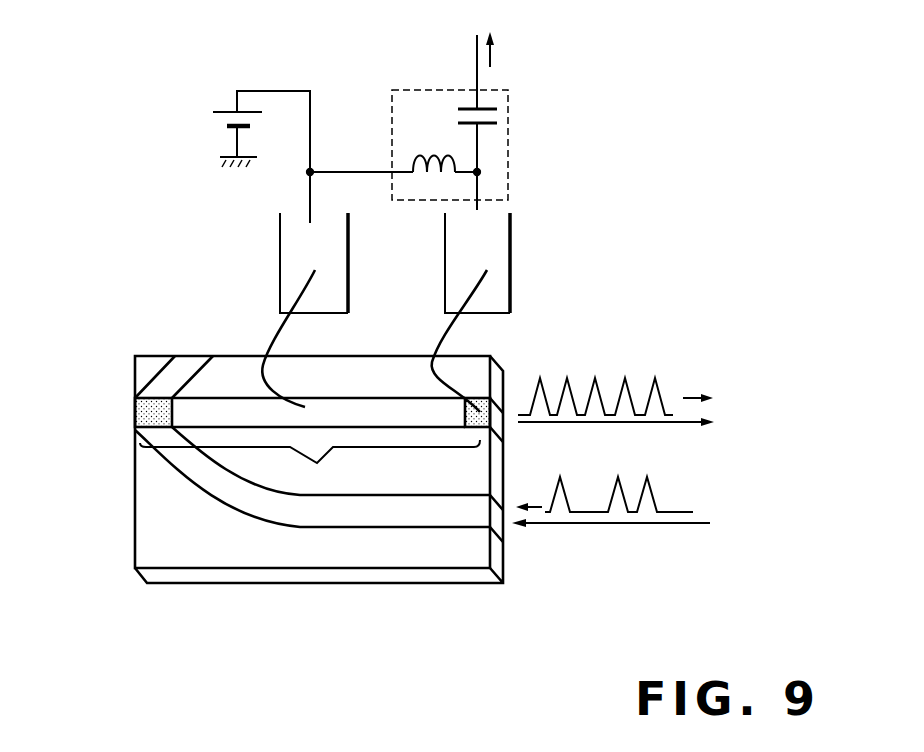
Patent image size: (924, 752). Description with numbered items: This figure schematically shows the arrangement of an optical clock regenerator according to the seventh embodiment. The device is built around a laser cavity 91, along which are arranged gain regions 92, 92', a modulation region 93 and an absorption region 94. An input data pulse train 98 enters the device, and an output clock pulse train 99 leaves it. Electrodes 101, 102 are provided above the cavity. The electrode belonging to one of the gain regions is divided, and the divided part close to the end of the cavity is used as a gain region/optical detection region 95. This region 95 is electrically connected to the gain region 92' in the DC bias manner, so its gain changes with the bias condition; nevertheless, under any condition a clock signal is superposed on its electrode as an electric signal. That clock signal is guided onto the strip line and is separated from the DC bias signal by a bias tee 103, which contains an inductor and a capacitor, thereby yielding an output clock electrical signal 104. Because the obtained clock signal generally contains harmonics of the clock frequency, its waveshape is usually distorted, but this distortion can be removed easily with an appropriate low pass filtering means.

The laser cavity 91 is at (321, 448).
The gain region 92 is at (319, 539).
The gain region 92' is at (397, 525).
The modulation region 93 is at (143, 417).
The absorption region 94 is at (187, 367).
The gain region/optical detection region 95 is at (500, 397).
The input data pulse train 98 is at (668, 522).
The output clock pulse train 99 is at (690, 382).
The electrode 101 is at (290, 243).
The electrode 102 is at (502, 242).
The bias tee 103 is at (518, 156).
The output clock electrical signal 104 is at (689, 51).